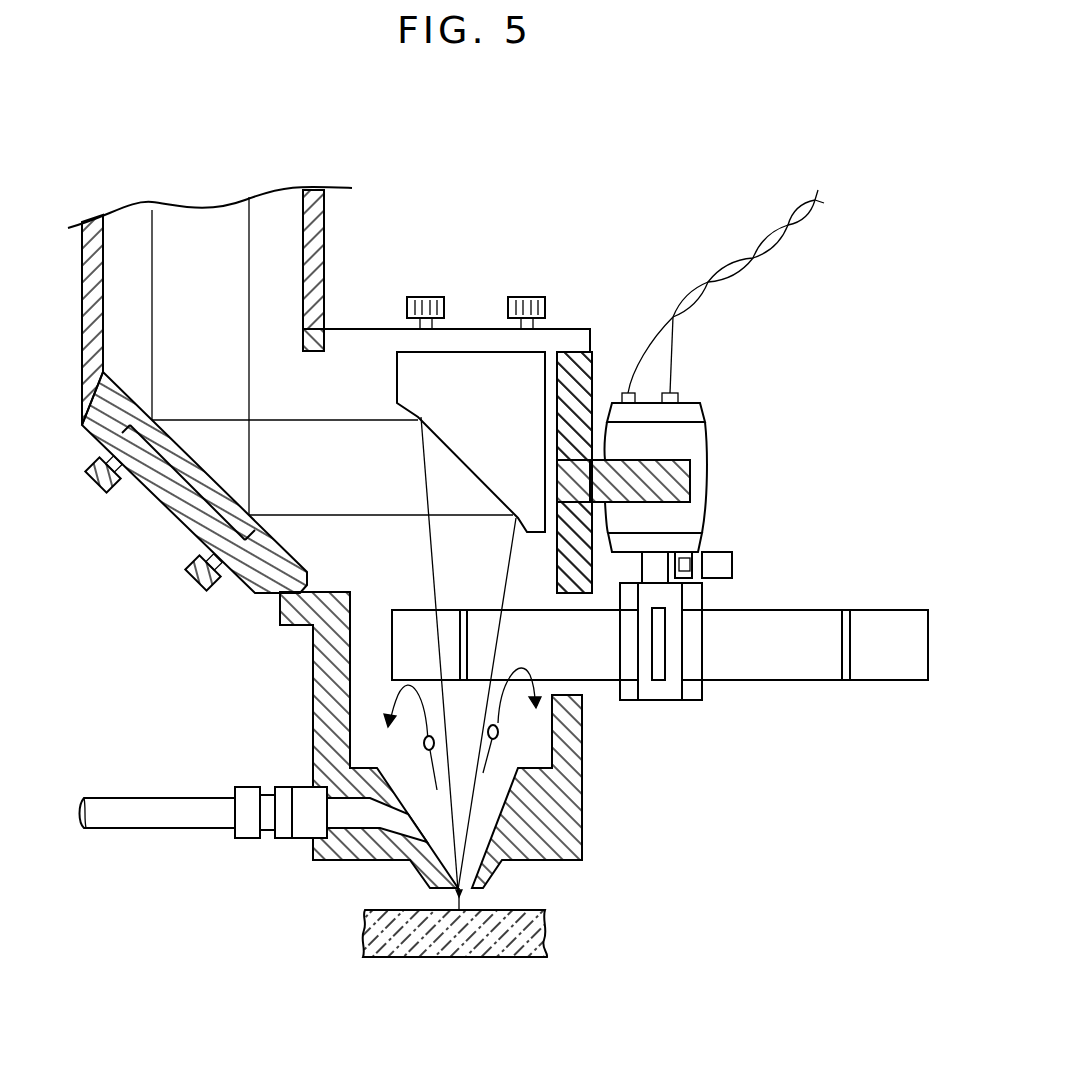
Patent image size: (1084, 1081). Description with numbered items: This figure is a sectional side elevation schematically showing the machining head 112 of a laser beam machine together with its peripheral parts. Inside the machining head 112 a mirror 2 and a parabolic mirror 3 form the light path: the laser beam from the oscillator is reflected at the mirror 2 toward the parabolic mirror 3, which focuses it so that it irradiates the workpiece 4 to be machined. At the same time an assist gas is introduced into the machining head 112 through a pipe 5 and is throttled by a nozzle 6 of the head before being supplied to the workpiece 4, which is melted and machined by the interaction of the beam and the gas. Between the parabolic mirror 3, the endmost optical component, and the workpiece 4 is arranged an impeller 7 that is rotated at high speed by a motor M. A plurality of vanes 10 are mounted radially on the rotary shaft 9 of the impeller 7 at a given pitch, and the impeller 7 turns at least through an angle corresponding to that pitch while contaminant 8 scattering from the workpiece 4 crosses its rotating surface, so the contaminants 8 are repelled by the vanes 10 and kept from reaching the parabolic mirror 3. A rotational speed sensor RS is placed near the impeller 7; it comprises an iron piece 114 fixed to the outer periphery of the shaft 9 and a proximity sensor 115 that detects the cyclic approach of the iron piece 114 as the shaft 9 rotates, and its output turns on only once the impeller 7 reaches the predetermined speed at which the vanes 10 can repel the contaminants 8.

The machining head 112 is at (562, 180).
The mirror 2 is at (187, 470).
The parabolic mirror 3 is at (462, 457).
The motor M is at (688, 440).
The rotary shaft 9 is at (652, 562).
The rotational speed sensor RS is at (739, 524).
The proximity sensor 115 is at (722, 567).
The iron piece 114 is at (680, 573).
The impeller 7 is at (644, 621).
The vanes 10 is at (418, 622).
The nozzle 6 is at (490, 870).
The pipe 5 is at (173, 813).
The contaminant 8 is at (424, 742).
The workpiece 4 is at (397, 935).